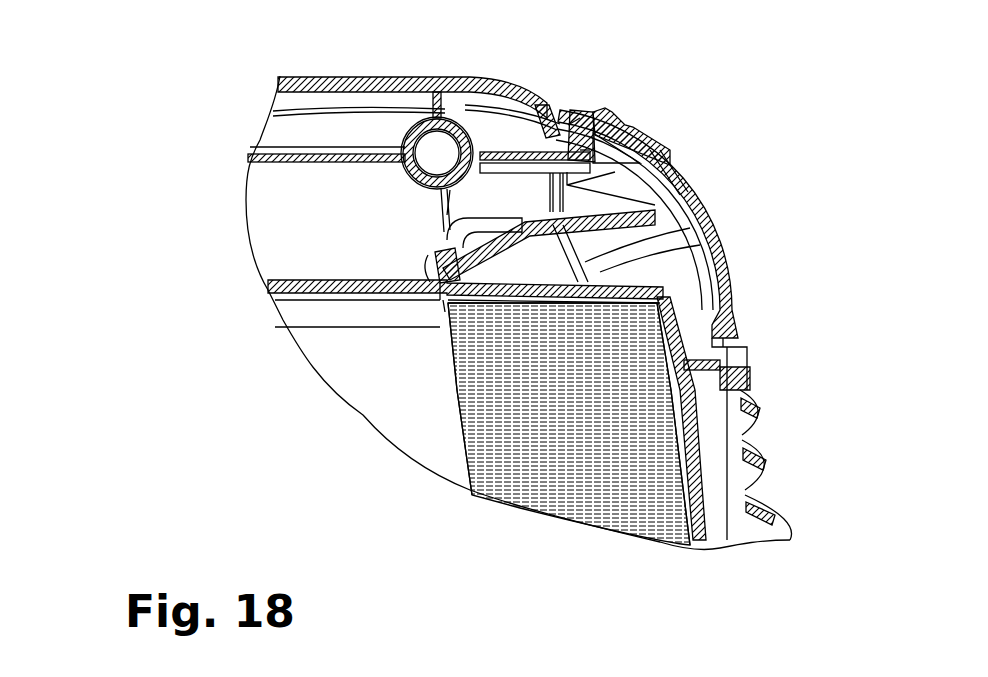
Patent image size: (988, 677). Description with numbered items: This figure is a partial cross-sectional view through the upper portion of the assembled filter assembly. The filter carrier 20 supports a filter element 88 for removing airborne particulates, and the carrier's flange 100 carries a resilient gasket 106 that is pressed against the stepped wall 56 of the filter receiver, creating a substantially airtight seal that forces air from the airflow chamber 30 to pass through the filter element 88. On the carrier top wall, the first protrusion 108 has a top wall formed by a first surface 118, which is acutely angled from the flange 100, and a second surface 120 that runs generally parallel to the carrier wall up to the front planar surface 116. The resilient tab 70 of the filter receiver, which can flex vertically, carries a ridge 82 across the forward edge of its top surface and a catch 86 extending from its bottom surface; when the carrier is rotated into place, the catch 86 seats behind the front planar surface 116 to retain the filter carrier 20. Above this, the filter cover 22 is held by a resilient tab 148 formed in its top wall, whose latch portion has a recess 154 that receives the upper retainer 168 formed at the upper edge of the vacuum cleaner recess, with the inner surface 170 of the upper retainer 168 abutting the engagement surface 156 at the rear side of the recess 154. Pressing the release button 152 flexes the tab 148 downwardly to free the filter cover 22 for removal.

The filter carrier 20 is at (675, 284).
The filter cover 22 is at (740, 283).
The airflow chamber 30 is at (357, 369).
The stepped wall 56 is at (443, 305).
The resilient tab 70 is at (650, 150).
The ridge 82 is at (615, 205).
The catch 86 is at (688, 242).
The filter element 88 is at (528, 455).
The flange 100 is at (443, 245).
The resilient gasket 106 is at (450, 320).
The first protrusion 108 is at (445, 238).
The front planar surface 116 is at (700, 225).
The first surface 118 is at (430, 122).
The second surface 120 is at (548, 212).
The resilient tab 148 is at (614, 110).
The release button 152 is at (630, 125).
The recess 154 is at (570, 115).
The engagement surface 156 is at (560, 125).
The upper retainer 168 is at (563, 127).
The inner surface 170 is at (522, 128).